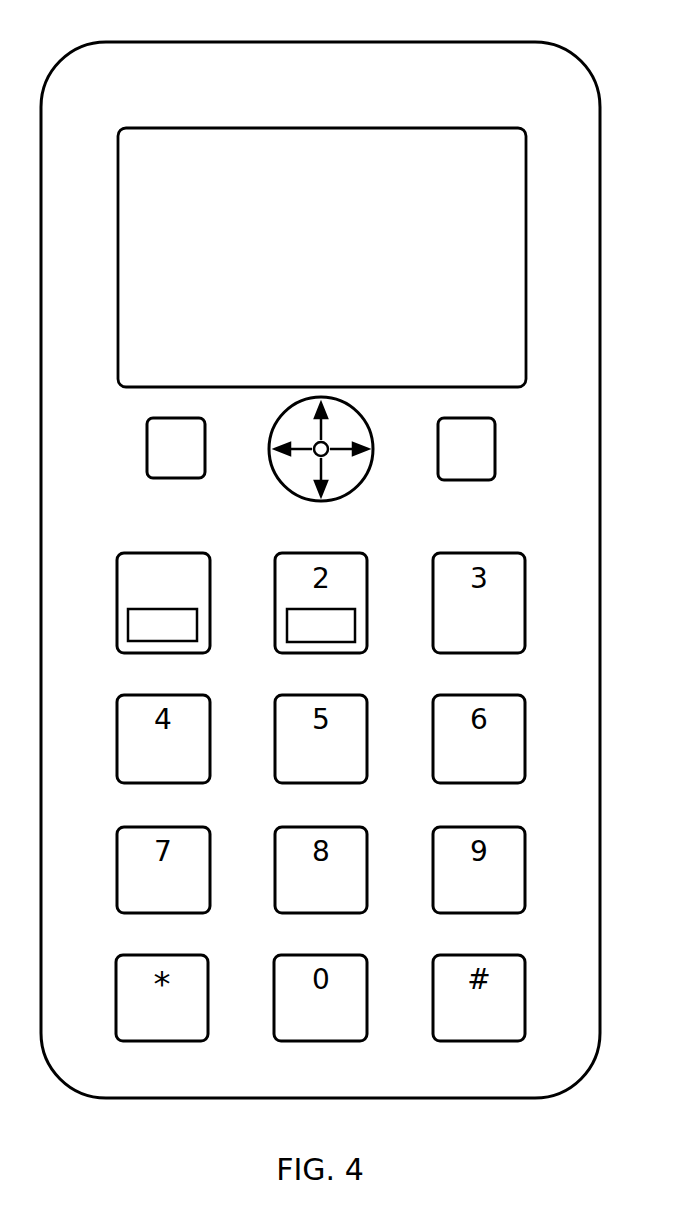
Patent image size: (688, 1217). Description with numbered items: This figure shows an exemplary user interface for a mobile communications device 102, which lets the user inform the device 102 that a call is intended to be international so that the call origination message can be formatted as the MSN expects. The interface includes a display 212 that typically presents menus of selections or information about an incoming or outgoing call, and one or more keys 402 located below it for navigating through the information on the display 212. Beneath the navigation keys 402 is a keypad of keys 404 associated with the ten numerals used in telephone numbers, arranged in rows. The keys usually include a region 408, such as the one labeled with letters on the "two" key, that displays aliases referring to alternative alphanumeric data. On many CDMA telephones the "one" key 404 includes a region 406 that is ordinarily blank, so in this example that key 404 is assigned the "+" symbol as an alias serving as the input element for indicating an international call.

The mobile communications device 102 is at (433, 42).
The display 212 is at (337, 128).
The navigation keys 402 is at (359, 481).
The keys 404 is at (133, 585).
The region 406 is at (128, 628).
The region 408 is at (353, 642).